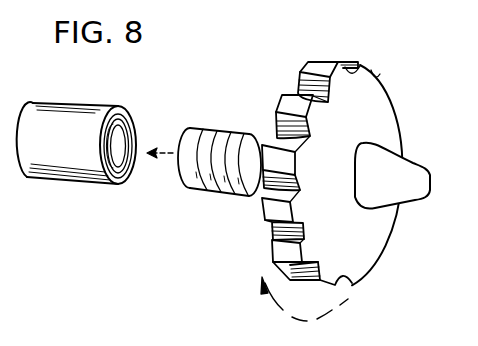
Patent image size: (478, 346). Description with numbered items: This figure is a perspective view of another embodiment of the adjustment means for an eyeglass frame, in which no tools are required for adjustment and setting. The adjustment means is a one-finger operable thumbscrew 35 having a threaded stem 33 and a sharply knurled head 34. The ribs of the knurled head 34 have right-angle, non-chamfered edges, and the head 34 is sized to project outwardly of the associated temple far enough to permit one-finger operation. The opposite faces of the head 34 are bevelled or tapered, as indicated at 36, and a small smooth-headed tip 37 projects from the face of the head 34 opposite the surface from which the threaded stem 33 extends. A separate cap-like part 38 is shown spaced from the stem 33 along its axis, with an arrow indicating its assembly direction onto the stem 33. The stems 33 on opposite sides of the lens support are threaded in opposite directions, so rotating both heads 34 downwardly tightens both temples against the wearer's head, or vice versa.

The threaded stem 33 is at (218, 138).
The knurled head 34 is at (265, 208).
The thumbscrew 35 is at (397, 92).
The bevelled face 36 is at (370, 242).
The tip 37 is at (427, 173).
The cap 38 is at (77, 125).